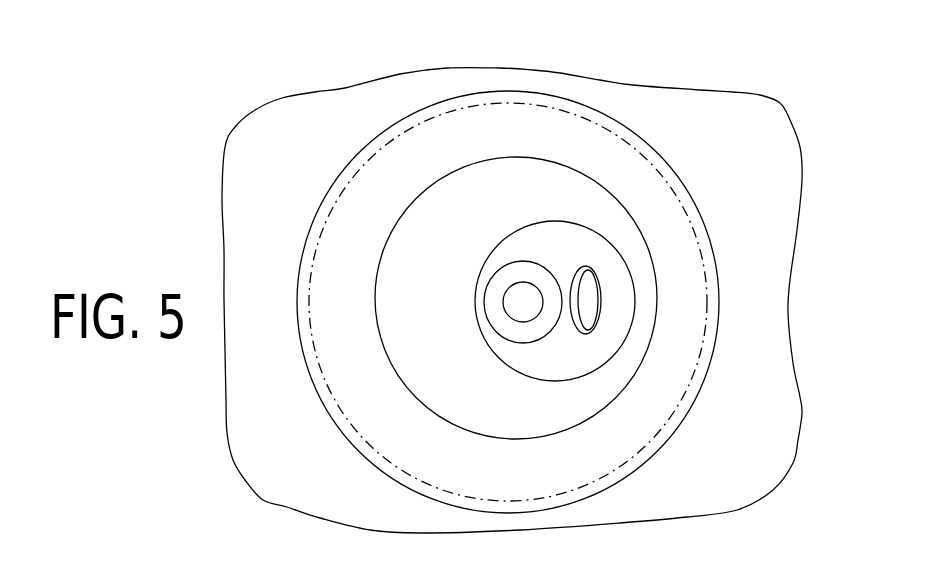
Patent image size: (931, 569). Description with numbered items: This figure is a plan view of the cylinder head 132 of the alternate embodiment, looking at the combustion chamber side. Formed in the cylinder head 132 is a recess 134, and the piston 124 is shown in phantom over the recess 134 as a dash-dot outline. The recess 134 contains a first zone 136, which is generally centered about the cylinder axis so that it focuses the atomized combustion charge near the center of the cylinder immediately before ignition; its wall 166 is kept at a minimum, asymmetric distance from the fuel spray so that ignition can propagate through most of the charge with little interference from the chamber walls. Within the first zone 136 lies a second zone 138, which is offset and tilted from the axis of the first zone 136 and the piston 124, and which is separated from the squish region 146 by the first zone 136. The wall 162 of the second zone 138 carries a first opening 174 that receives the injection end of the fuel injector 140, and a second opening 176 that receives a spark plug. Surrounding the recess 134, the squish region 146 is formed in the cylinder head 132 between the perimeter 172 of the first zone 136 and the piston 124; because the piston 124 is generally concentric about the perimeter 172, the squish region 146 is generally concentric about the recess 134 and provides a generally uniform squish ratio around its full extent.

The piston 124 is at (446, 112).
The cylinder head 132 is at (767, 173).
The recess 134 is at (494, 147).
The first zone 136 is at (409, 347).
The second zone 138 is at (546, 369).
The fuel injector 140 is at (505, 295).
The squish region 146 is at (346, 227).
The wall of second zone 162 is at (578, 242).
The wall of first zone 166 is at (437, 387).
The perimeter of first zone 172 is at (527, 163).
The first opening 174 is at (537, 262).
The second opening 176 is at (601, 300).